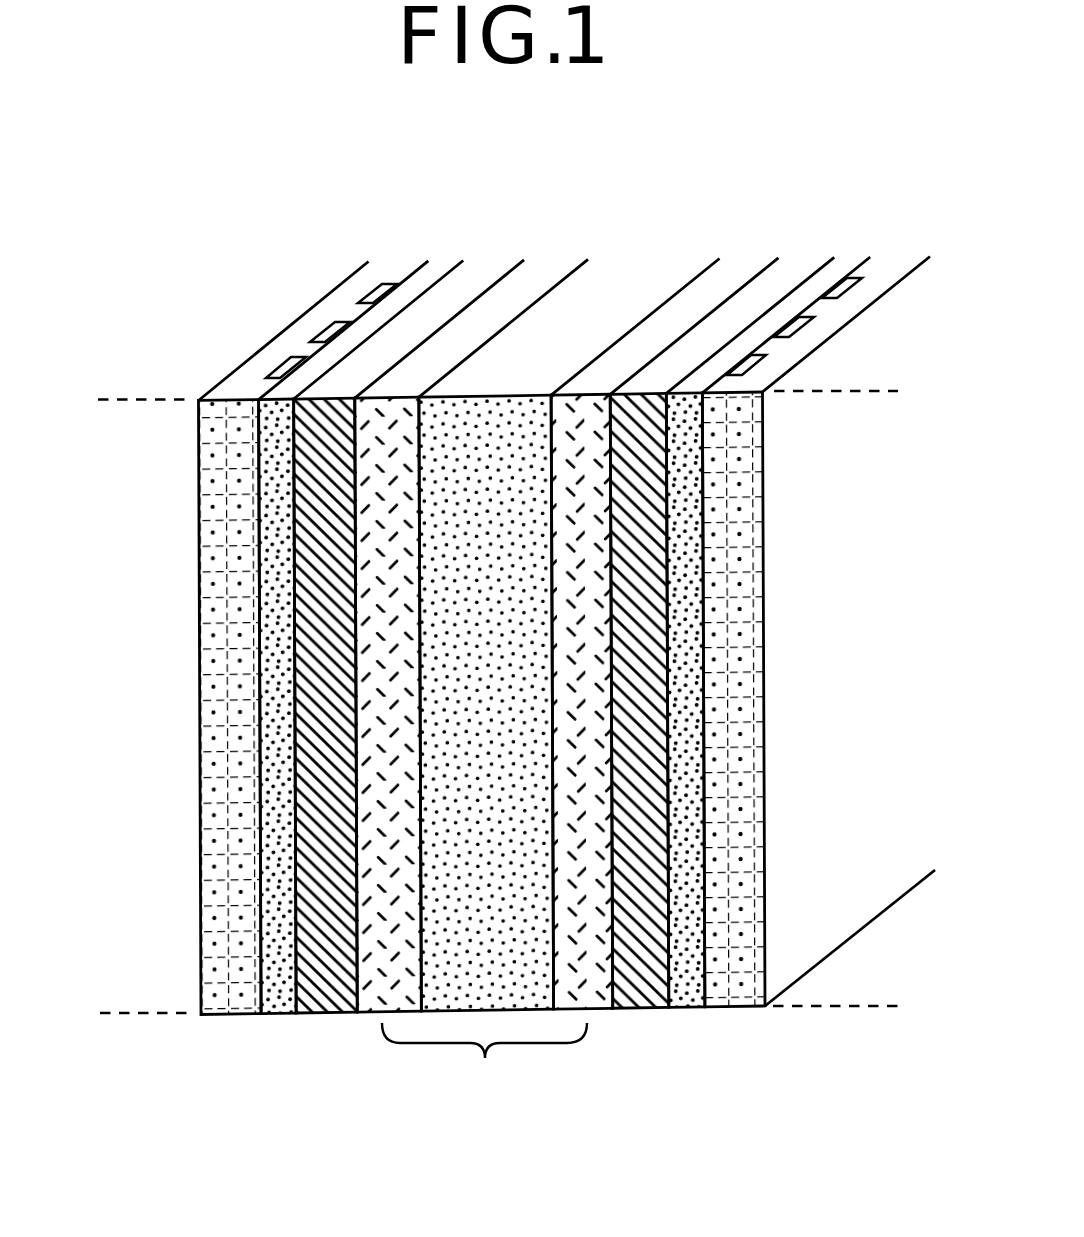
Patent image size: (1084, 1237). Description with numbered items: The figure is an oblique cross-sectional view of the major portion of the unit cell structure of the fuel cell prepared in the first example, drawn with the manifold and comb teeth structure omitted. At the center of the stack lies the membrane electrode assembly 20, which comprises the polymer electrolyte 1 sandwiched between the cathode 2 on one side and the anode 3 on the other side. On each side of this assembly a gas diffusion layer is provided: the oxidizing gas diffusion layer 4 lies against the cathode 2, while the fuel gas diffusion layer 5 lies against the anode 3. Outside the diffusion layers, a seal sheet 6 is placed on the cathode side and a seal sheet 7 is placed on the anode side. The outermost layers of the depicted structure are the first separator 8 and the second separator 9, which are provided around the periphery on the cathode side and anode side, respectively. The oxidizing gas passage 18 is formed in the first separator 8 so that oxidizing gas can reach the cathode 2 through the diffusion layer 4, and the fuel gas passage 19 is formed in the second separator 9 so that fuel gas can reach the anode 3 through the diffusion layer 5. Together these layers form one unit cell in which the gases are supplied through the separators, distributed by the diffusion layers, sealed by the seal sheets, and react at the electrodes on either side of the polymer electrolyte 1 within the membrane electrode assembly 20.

The polymer electrolyte 1 is at (523, 915).
The cathode 2 is at (593, 880).
The anode 3 is at (370, 943).
The diffusion layer 4 is at (640, 793).
The diffusion layer 5 is at (312, 847).
The seal sheet 6 is at (690, 695).
The seal sheet 7 is at (270, 767).
The first separator 8 is at (742, 603).
The second separator 9 is at (217, 670).
The oxidizing gas passage 18 is at (857, 278).
The fuel gas passage 19 is at (390, 284).
The membrane electrode assembly 20 is at (484, 1066).